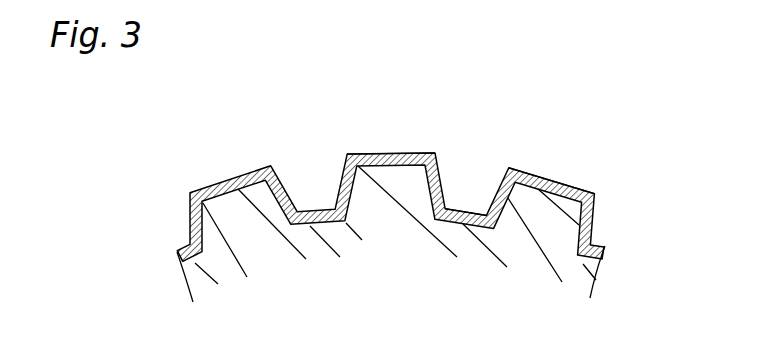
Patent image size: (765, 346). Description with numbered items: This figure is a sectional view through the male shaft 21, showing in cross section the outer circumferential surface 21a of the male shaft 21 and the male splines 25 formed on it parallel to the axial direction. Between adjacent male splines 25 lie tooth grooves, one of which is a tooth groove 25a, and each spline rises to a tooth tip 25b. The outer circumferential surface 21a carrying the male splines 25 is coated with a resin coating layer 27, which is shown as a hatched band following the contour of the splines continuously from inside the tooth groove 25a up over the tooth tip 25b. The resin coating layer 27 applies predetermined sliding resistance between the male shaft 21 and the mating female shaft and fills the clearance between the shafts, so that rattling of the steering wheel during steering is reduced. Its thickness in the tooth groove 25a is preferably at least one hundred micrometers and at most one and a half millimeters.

The male shaft 21 is at (593, 286).
The outer circumferential surface 21a is at (237, 168).
The male splines 25 is at (242, 218).
The tooth groove 25a is at (467, 192).
The tooth tip 25b is at (549, 181).
The resin coating layer 27 is at (401, 157).